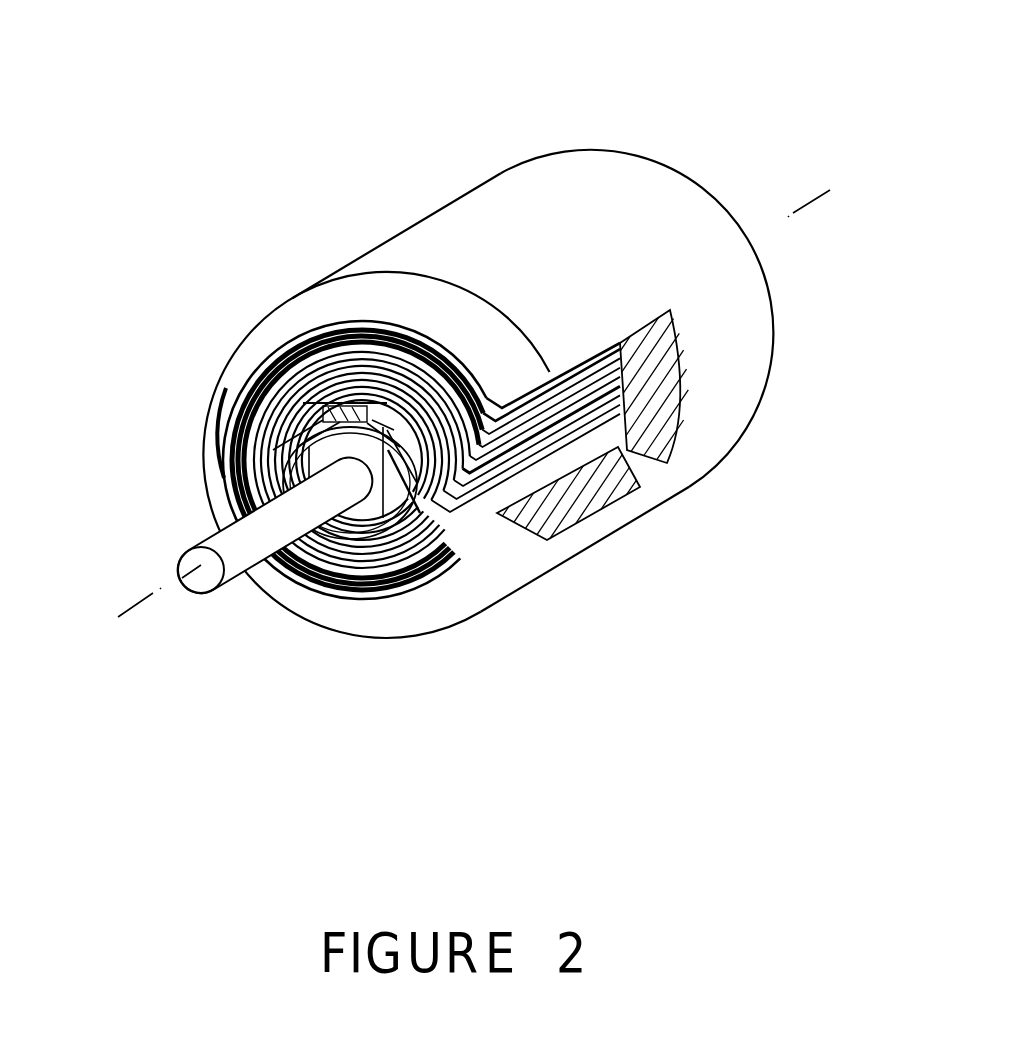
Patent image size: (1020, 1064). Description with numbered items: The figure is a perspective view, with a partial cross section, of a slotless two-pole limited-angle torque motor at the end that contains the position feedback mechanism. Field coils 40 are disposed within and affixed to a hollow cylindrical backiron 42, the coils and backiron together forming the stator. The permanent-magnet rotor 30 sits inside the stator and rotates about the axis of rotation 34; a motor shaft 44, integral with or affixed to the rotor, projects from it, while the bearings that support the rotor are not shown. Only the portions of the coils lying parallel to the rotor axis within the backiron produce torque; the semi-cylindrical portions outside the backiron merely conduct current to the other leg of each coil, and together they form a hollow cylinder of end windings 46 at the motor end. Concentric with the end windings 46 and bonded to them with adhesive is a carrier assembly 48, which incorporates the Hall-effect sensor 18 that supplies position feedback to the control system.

The Hall-effect sensor 18 is at (497, 497).
The permanent-magnet rotor 30 is at (357, 513).
The axis of rotation 34 is at (753, 238).
The field coils 40 is at (595, 437).
The hollow cylindrical backiron 42 is at (703, 370).
The motor shaft 44 is at (208, 562).
The end windings 46 is at (247, 397).
The carrier assembly 48 is at (413, 520).